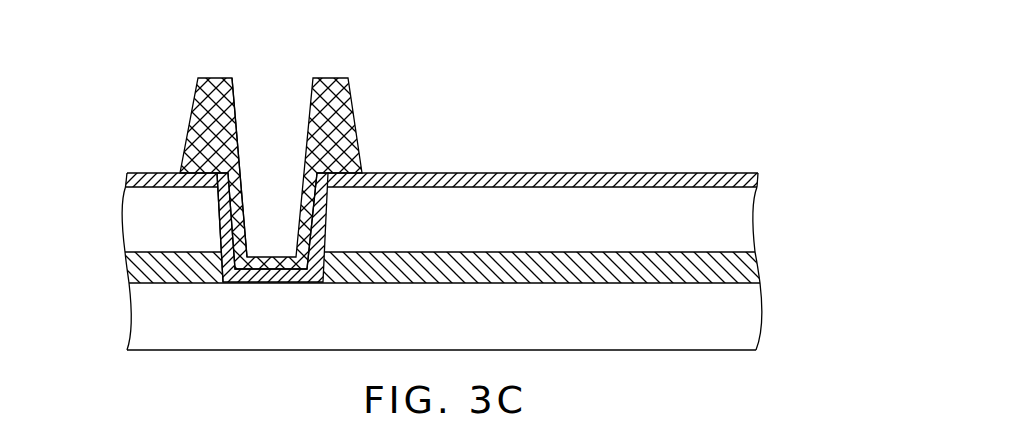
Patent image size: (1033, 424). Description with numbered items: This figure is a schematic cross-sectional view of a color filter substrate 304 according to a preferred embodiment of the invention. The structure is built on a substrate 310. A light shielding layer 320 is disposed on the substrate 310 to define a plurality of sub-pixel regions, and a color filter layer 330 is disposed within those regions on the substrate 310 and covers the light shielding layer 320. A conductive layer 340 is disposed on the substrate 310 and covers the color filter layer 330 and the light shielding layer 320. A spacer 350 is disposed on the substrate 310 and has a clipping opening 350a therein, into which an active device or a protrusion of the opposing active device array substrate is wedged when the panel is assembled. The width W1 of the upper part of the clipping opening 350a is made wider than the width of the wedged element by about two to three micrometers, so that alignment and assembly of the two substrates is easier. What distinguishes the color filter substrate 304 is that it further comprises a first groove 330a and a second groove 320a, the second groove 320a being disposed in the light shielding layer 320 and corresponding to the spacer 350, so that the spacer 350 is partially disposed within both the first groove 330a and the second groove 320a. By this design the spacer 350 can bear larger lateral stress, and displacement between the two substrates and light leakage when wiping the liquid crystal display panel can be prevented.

The color filter substrate 304 is at (438, 204).
The substrate 310 is at (743, 322).
The light shielding layer 320 is at (743, 268).
The second groove 320a is at (218, 210).
The color filter layer 330 is at (740, 221).
The first groove 330a is at (238, 128).
The conductive layer 340 is at (757, 182).
The spacer 350 is at (352, 160).
The clipping opening 350a is at (225, 262).
The width of the upper part of the clipping opening W1 is at (315, 70).